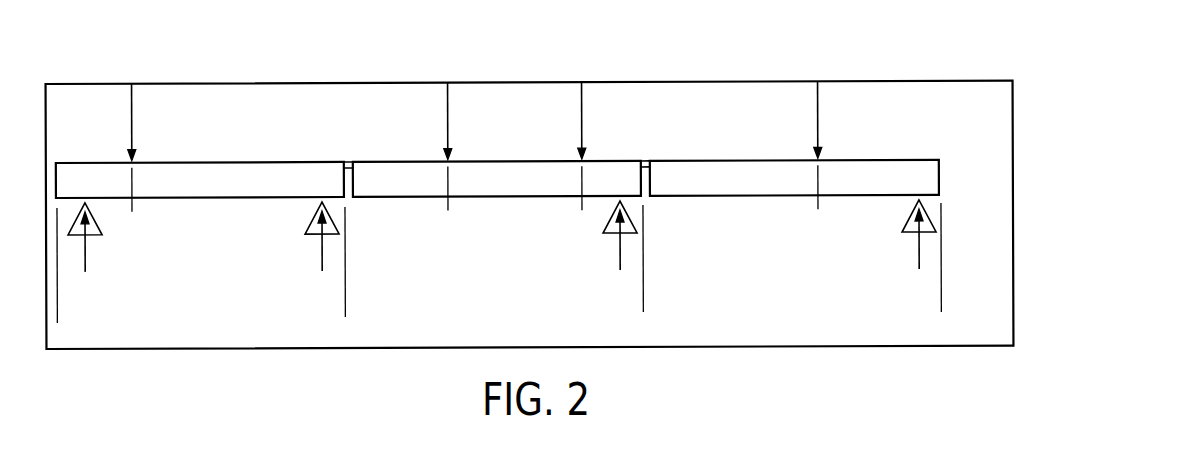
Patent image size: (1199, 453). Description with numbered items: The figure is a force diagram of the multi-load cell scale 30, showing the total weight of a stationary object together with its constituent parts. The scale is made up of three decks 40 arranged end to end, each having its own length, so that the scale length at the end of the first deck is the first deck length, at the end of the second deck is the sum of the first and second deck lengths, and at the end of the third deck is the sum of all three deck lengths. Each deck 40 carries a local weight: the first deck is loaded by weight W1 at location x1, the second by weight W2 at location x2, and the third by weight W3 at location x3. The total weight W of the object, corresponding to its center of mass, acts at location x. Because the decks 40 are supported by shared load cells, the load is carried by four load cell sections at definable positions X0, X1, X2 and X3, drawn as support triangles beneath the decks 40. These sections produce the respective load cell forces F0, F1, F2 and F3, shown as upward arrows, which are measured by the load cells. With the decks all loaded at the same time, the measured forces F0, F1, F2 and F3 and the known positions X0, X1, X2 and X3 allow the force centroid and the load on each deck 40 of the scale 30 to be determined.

The multi-load cell scale 30 is at (611, 205).
The deck 40 is at (224, 193).
The local weight on first deck W1 is at (155, 122).
The total weight of object W is at (463, 120).
The local weight on second deck W2 is at (606, 120).
The local weight on third deck W3 is at (842, 119).
The load cell force at first load cell section F0 is at (95, 240).
The load cell force at second load cell section F1 is at (314, 239).
The load cell force at third load cell section F2 is at (609, 242).
The load cell force at fourth load cell section F3 is at (909, 237).
The position of first load cell section X0 is at (77, 279).
The position of second load cell section X1 is at (329, 275).
The position of third load cell section X2 is at (643, 275).
The position of fourth load cell section X3 is at (937, 274).
The position of weight W1 x1 is at (136, 209).
The position of total weight x is at (447, 208).
The position of weight W2 x2 is at (587, 207).
The position of weight W3 x3 is at (821, 207).